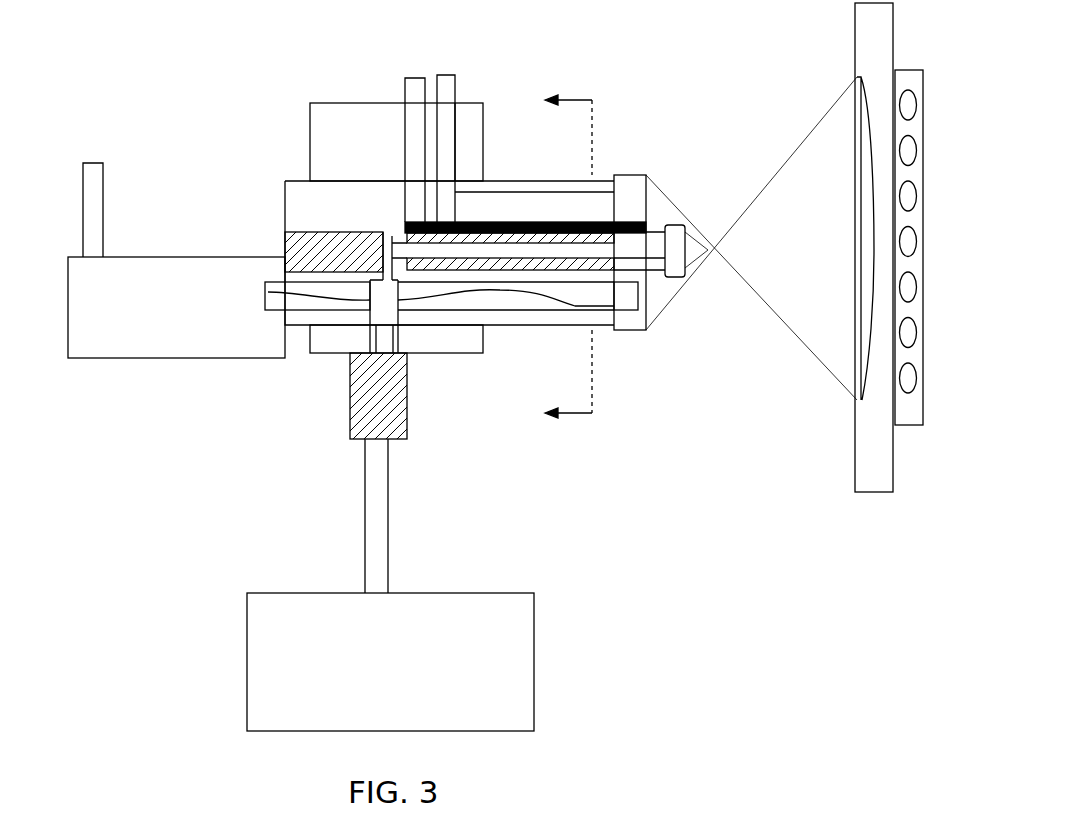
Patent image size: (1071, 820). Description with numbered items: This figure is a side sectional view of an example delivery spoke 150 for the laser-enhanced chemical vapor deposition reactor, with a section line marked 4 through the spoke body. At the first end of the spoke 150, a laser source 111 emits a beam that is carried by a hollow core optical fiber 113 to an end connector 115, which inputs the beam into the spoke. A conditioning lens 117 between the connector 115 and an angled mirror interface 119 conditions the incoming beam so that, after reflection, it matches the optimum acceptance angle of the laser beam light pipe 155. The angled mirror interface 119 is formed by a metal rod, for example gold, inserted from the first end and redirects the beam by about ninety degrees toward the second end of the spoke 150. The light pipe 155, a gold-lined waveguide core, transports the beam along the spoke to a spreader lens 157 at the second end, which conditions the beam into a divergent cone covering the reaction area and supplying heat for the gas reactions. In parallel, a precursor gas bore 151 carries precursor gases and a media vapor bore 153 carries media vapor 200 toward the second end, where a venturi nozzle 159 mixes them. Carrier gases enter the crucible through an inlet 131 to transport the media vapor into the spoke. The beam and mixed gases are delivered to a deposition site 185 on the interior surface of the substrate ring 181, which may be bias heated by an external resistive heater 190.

The laser source 111 is at (247, 670).
The hollow core optical fiber 113 is at (365, 555).
The end connector 115 is at (407, 415).
The conditioning lens 117 is at (397, 325).
The angled mirror interface 119 is at (385, 242).
The inlet 131 is at (100, 162).
The spoke 150 is at (232, 188).
The precursor gas bore 151 is at (435, 52).
The media vapor bore 153 is at (562, 812).
The laser beam light pipe 155 is at (470, 243).
The spreader lens 157 is at (677, 280).
The venturi nozzle 159 is at (664, 205).
The substrate ring 181 is at (866, 494).
The deposition site 185 is at (857, 400).
The external resistive heater 190 is at (908, 426).
The vapor 200 is at (317, 300).
The section line 4- 4 is at (569, 258).